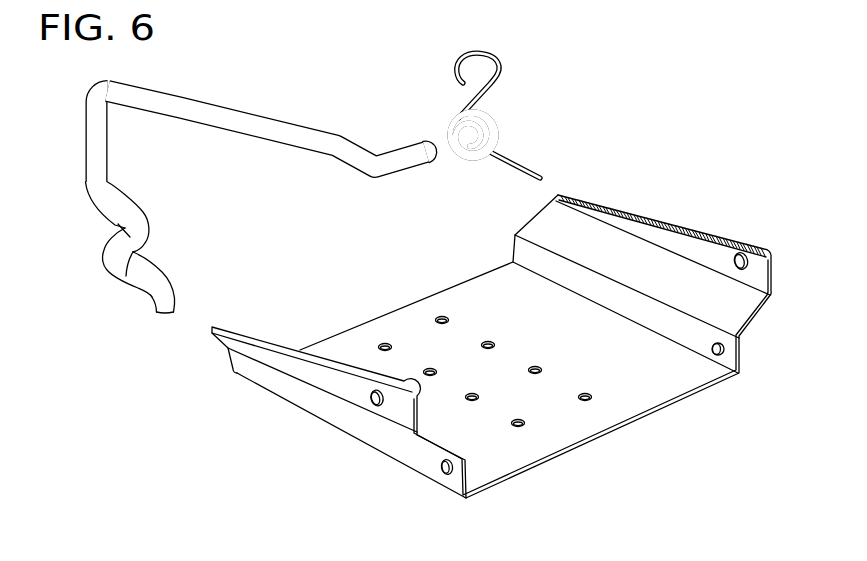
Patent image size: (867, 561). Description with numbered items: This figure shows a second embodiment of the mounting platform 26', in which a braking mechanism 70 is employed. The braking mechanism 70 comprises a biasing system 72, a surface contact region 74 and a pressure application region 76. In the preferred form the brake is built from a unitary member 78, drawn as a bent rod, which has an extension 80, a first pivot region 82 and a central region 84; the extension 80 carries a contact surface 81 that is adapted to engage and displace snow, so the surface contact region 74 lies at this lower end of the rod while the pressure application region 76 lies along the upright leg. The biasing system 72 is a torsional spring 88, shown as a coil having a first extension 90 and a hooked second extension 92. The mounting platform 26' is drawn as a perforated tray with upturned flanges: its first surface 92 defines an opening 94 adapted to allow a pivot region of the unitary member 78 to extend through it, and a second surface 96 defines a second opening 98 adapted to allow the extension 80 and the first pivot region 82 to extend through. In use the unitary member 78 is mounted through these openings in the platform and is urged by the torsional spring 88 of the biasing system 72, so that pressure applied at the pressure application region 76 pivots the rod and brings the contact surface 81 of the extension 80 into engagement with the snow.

The mounting platform 26' is at (496, 356).
The braking mechanism 70 is at (230, 209).
The biasing system 72 is at (518, 112).
The surface contact region 74 is at (162, 303).
The pressure application region 76 is at (97, 107).
The unitary member 78 is at (188, 110).
The extension 80 is at (128, 272).
The contact surface 81 is at (160, 318).
The first pivot region 82 is at (125, 230).
The central region 84 is at (120, 93).
The torsional spring 88 is at (493, 128).
The first extension 90 is at (530, 167).
The second extension 92 is at (495, 62).
The opening 94 is at (723, 346).
The second surface 96 is at (445, 462).
The second opening 98 is at (450, 473).